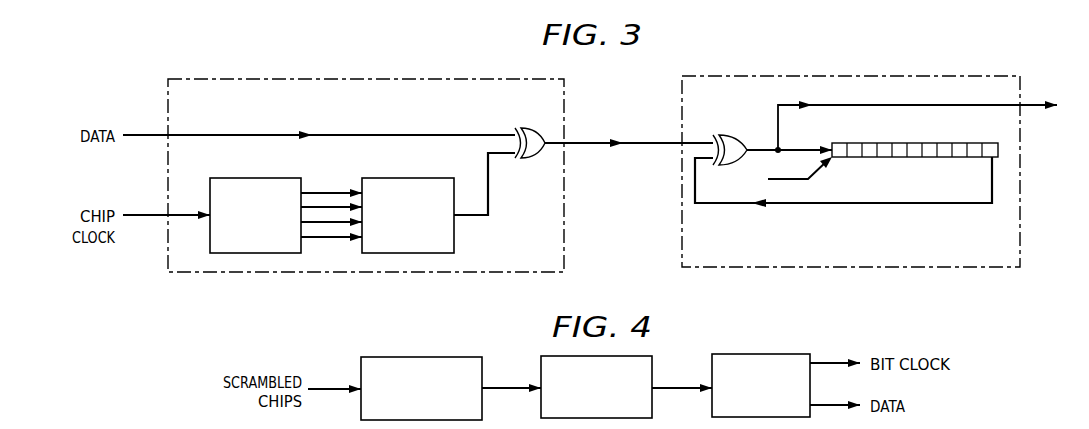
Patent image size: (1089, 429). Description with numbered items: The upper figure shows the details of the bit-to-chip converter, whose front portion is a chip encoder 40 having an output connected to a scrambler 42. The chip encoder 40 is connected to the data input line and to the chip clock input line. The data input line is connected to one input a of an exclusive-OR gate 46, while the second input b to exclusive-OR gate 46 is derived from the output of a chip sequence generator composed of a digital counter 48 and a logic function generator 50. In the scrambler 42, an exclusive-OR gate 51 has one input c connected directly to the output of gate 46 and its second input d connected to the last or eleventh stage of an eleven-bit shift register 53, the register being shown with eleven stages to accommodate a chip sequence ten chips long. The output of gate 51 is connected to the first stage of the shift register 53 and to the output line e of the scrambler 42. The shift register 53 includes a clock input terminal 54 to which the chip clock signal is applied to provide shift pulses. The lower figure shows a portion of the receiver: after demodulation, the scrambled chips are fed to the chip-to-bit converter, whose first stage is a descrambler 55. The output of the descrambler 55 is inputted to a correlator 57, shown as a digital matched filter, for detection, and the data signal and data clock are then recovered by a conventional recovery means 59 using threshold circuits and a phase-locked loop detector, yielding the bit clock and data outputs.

In FIG. 3, the chip encoder 40 is at (417, 79).
In FIG. 3, the scrambler 42 is at (742, 76).
In FIG. 3, the exclusive-OR gate 46 is at (537, 128).
In FIG. 3, the digital counter 48 is at (240, 178).
In FIG. 3, the logic function generator 50 is at (395, 178).
In FIG. 3, the exclusive-OR gate 51 is at (736, 135).
In FIG. 3, the shift register 53 is at (868, 157).
In FIG. 3, the clock input terminal 54 is at (792, 179).
In FIG. 4, the descrambler 55 is at (392, 357).
In FIG. 4, the correlator 57 is at (541, 358).
In FIG. 4, the recovery means 59 is at (737, 354).
In FIG. 3, the input of exclusive-OR gate 46 a is at (387, 135).
In FIG. 3, the second input of exclusive-OR gate 46 b is at (490, 170).
In FIG. 3, the input of exclusive-OR gate 51 c is at (692, 143).
In FIG. 3, the second input of exclusive-OR gate 51 d is at (730, 203).
In FIG. 3, the output line of scrambler e is at (858, 105).